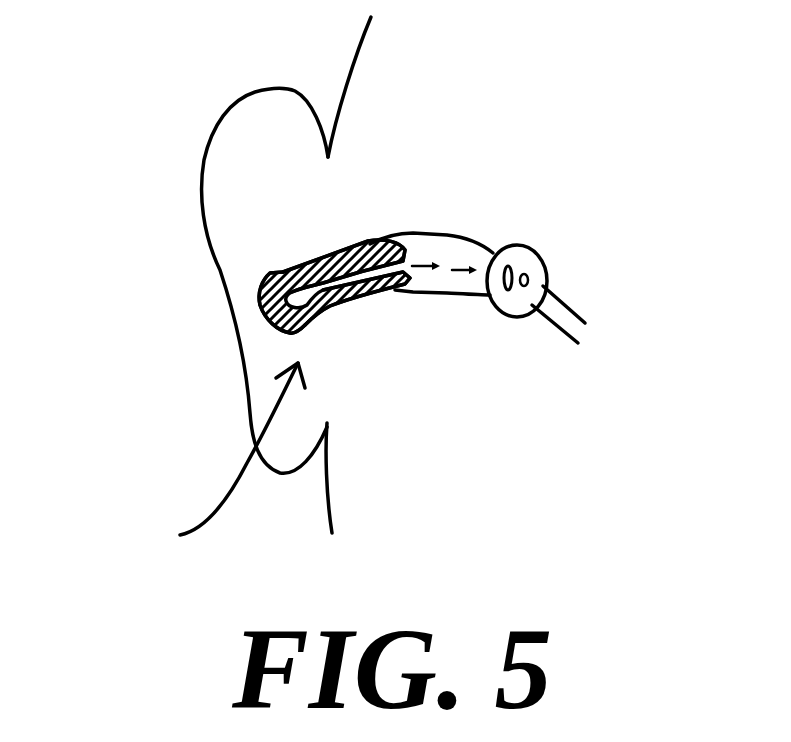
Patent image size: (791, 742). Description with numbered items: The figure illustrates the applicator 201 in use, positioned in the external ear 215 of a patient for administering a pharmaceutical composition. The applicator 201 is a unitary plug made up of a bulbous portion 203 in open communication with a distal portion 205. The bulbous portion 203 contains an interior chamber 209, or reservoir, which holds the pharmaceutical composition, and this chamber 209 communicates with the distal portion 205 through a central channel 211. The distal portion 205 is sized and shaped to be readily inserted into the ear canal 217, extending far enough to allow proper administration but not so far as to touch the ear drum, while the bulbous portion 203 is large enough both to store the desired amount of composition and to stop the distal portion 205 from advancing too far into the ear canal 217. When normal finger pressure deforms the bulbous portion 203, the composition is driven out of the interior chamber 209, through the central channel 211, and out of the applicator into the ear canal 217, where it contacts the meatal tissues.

The applicator 201 is at (408, 407).
The bulbous portion 203 is at (276, 273).
The distal portion 205 is at (357, 245).
The interior chamber 209 is at (363, 297).
The central channel 211 is at (355, 267).
The external ear 215 is at (172, 470).
The ear canal 217 is at (463, 231).